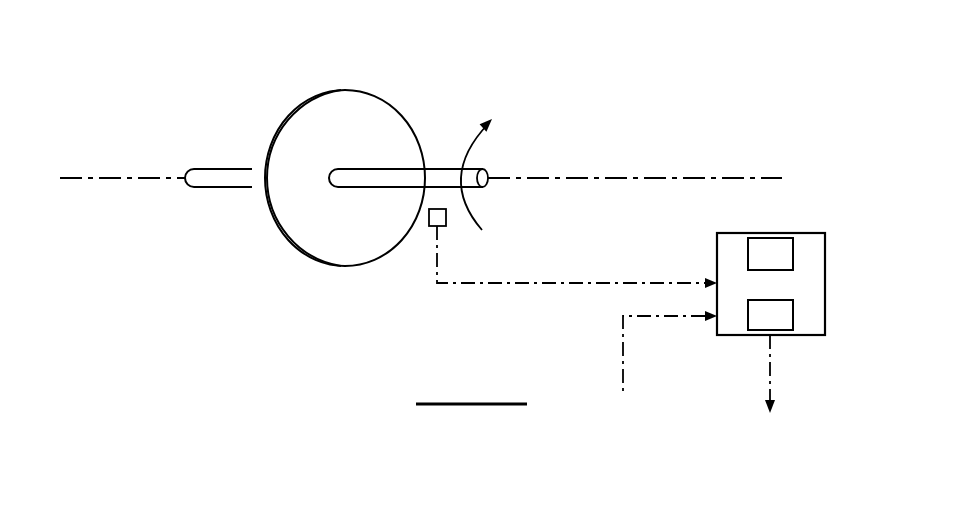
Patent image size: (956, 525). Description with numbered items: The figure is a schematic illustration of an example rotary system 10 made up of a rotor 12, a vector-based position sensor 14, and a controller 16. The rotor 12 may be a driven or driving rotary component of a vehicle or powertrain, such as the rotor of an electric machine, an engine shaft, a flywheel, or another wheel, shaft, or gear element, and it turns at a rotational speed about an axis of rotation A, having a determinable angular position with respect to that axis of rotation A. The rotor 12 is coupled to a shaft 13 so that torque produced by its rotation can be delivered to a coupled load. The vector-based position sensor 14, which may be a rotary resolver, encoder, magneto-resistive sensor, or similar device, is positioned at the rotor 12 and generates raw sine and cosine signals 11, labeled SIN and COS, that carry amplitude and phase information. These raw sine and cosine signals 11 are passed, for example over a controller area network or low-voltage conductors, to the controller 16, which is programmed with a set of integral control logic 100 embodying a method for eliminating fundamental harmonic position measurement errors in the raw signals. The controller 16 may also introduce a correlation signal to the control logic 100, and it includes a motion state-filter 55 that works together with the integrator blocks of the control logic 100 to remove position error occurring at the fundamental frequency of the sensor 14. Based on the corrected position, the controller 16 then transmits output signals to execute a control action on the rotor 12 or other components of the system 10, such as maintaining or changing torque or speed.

The system 10 is at (646, 44).
The raw sine and cosine signals 11 is at (580, 283).
The rotor 12 is at (382, 121).
The shaft 13 is at (217, 168).
The vector-based position sensor 14 is at (430, 229).
The controller 16 is at (825, 283).
The motion state-filter 55 is at (793, 315).
The control logic 100 is at (770, 254).
The axis of rotation A is at (712, 178).